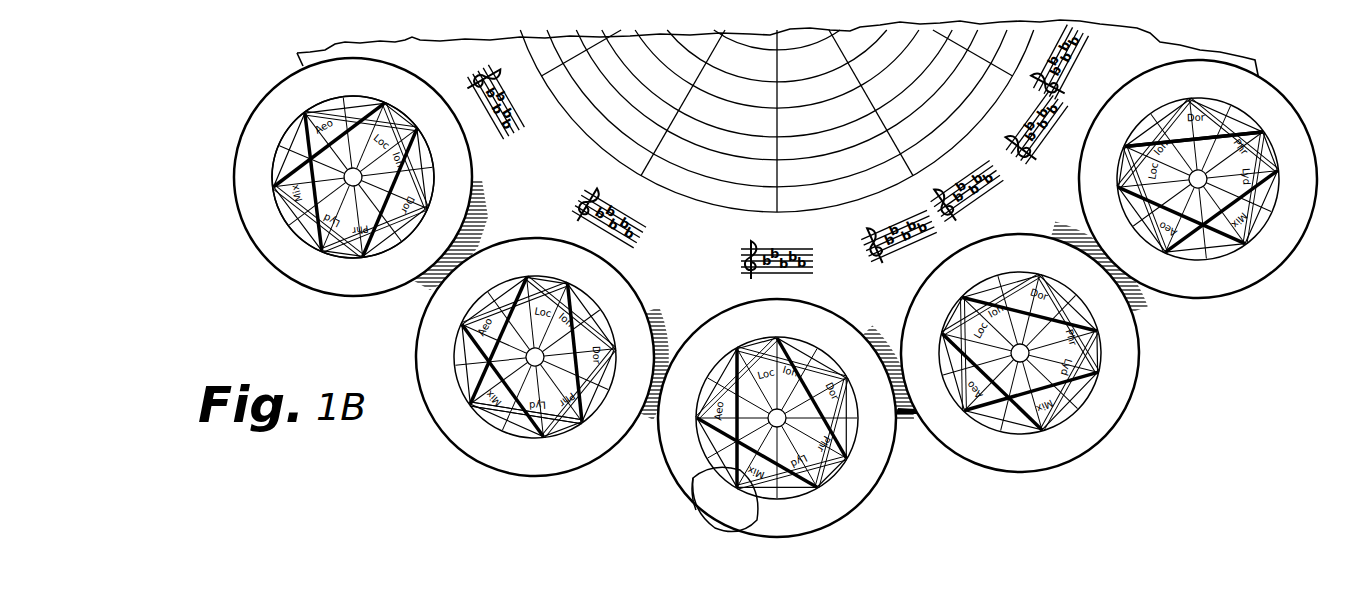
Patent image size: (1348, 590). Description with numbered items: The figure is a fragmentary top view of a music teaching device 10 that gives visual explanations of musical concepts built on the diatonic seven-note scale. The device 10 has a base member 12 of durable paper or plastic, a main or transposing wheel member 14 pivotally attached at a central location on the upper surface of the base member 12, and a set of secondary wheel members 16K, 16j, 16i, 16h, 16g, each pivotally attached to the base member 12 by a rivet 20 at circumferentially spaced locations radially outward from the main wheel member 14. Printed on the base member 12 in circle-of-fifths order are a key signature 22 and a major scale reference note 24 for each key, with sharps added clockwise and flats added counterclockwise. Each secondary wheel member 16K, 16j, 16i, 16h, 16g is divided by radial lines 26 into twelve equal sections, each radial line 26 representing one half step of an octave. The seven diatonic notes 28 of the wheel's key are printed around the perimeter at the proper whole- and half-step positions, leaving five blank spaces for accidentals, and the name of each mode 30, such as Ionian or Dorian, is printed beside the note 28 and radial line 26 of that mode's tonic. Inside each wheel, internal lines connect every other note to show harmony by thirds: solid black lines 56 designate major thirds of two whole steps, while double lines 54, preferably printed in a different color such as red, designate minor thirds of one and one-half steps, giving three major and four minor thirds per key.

The device 10 is at (767, 282).
The base member 12 is at (806, 300).
The main or transposing wheel member 14 is at (776, 121).
The secondary wheel member 16K is at (352, 176).
The secondary wheel member 16j is at (535, 364).
The secondary wheel member 16i is at (782, 426).
The secondary wheel member 16h is at (1023, 358).
The secondary wheel member 16g is at (1194, 179).
The rivet 20 is at (290, 160).
The key signature 22 is at (649, 212).
The major scale reference note 24 is at (663, 206).
The radial lines 26 is at (1228, 183).
The notes 28 is at (1033, 468).
The name of each mode 30 is at (502, 400).
The double lines 54 is at (727, 528).
The solid black lines 56 is at (690, 499).